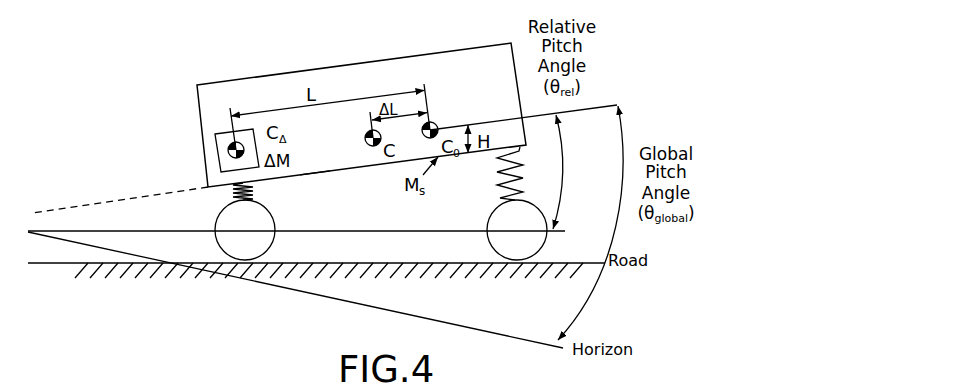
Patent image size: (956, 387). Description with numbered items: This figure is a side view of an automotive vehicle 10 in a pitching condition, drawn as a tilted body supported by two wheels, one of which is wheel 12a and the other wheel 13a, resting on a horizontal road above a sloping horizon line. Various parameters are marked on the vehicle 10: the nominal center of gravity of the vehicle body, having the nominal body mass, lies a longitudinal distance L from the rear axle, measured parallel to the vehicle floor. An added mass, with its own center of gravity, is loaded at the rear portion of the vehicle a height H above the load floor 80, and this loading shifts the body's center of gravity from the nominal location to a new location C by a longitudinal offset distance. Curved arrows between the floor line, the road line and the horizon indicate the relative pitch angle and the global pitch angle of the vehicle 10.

The automotive vehicle 10 is at (313, 70).
The load floor 80 is at (313, 172).
The rear wheel 12a is at (496, 209).
The front wheel 13a is at (266, 207).